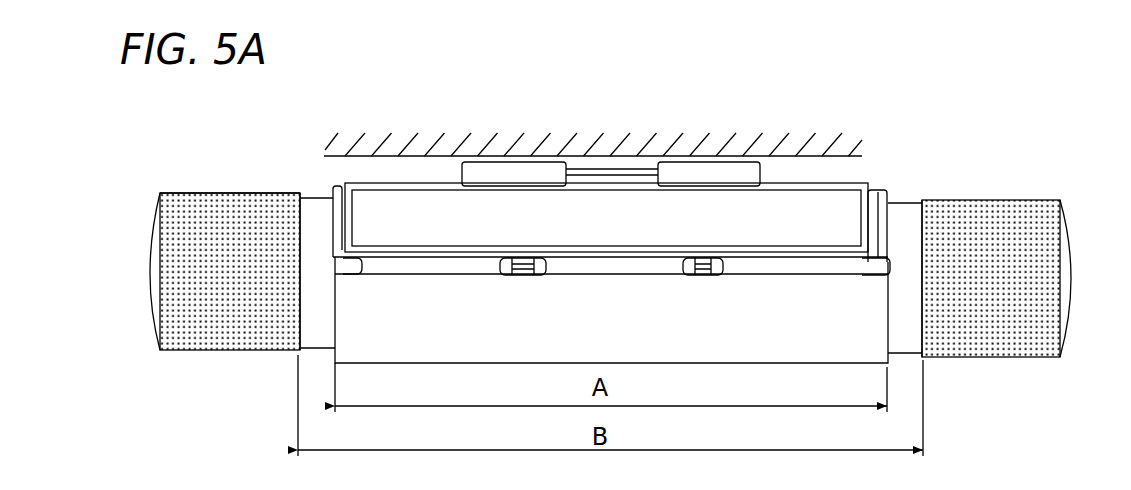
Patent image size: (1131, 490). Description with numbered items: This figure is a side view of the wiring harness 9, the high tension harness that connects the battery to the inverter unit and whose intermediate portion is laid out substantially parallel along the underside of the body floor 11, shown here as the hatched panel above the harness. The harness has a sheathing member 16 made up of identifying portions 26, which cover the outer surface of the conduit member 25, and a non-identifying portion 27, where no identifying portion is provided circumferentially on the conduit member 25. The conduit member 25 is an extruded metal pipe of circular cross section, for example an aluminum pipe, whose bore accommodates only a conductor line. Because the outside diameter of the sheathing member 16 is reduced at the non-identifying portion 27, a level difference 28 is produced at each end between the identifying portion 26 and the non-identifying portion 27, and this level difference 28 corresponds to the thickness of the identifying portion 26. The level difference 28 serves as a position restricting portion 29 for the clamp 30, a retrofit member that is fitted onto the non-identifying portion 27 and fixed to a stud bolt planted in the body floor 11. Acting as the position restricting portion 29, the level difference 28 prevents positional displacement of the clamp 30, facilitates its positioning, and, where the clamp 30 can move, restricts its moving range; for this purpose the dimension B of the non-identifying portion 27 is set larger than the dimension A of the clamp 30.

The wiring harness 9 is at (1047, 170).
The body floor 11 is at (848, 152).
The sheathing member 16 is at (240, 193).
The conduit member 25 is at (313, 210).
The identifying portion 26 is at (629, 254).
The non-identifying portion 27 is at (910, 215).
The level difference 28 is at (632, 303).
The position restricting portion 29 is at (305, 302).
The clamp 30 is at (605, 212).